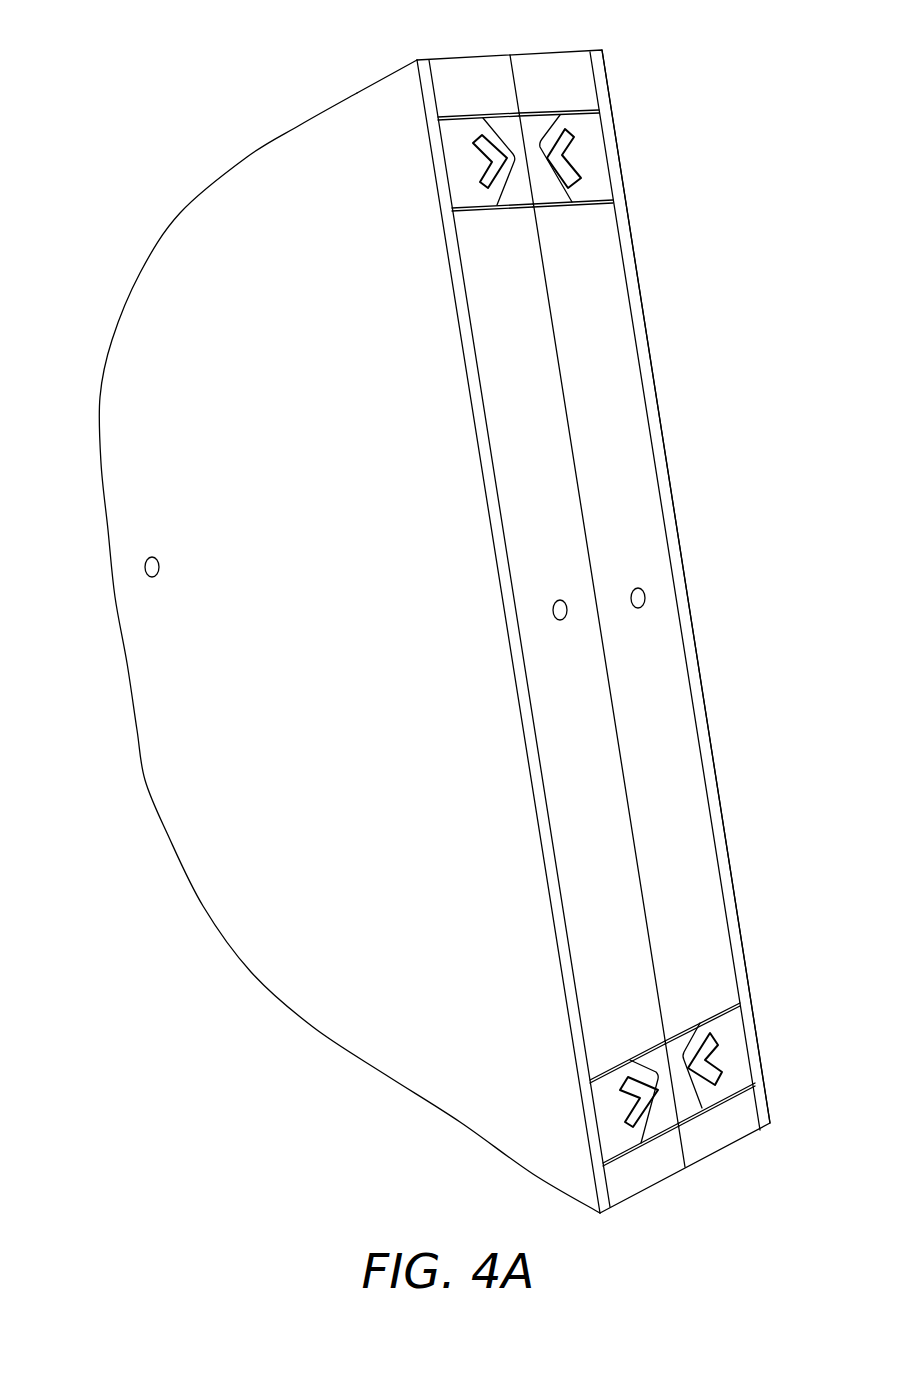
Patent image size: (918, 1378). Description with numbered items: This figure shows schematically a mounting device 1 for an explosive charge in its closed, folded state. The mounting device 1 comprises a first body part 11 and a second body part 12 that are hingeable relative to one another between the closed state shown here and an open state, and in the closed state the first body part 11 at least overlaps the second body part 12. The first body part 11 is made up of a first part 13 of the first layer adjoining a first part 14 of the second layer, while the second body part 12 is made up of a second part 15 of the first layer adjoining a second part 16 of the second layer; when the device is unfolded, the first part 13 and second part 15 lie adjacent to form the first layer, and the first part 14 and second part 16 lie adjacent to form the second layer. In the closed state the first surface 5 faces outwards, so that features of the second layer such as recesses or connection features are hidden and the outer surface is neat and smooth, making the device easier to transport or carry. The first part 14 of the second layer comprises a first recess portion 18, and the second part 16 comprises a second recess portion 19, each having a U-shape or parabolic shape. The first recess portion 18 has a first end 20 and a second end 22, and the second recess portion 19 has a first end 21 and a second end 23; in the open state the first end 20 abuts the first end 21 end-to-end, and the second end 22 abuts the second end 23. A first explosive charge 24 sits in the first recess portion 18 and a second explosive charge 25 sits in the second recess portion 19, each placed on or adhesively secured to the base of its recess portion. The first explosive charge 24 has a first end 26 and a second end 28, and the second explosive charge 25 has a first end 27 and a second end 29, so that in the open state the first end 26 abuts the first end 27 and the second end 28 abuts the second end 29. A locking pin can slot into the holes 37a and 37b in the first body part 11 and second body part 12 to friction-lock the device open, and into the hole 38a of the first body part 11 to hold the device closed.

The mounting device 1 is at (152, 181).
The first surface 5 is at (525, 750).
The first body part 11 is at (351, 86).
The second body part 12 is at (645, 247).
The first part of the first layer 13 is at (546, 841).
The first part of the second layer 14 is at (586, 923).
The second part of the first layer 15 is at (650, 352).
The second part of the second layer 16 is at (625, 453).
The first recess portion 18 is at (578, 621).
The second recess portion 19 is at (664, 598).
The first end of the first recess portion 20 is at (668, 1123).
The first end of the second recess portion 21 is at (688, 1105).
The second end of the first recess portion 22 is at (503, 123).
The second end of the second recess portion 23 is at (535, 123).
The first explosive charge 24 is at (504, 665).
The second explosive charge 25 is at (693, 608).
The first end of the first explosive charge 26 is at (632, 1118).
The first end of the second explosive charge 27 is at (718, 1042).
The second end of the first explosive charge 28 is at (483, 173).
The second end of the second explosive charge 29 is at (567, 143).
The hole 37a is at (553, 612).
The hole 37b is at (645, 600).
The hole 38a is at (143, 570).